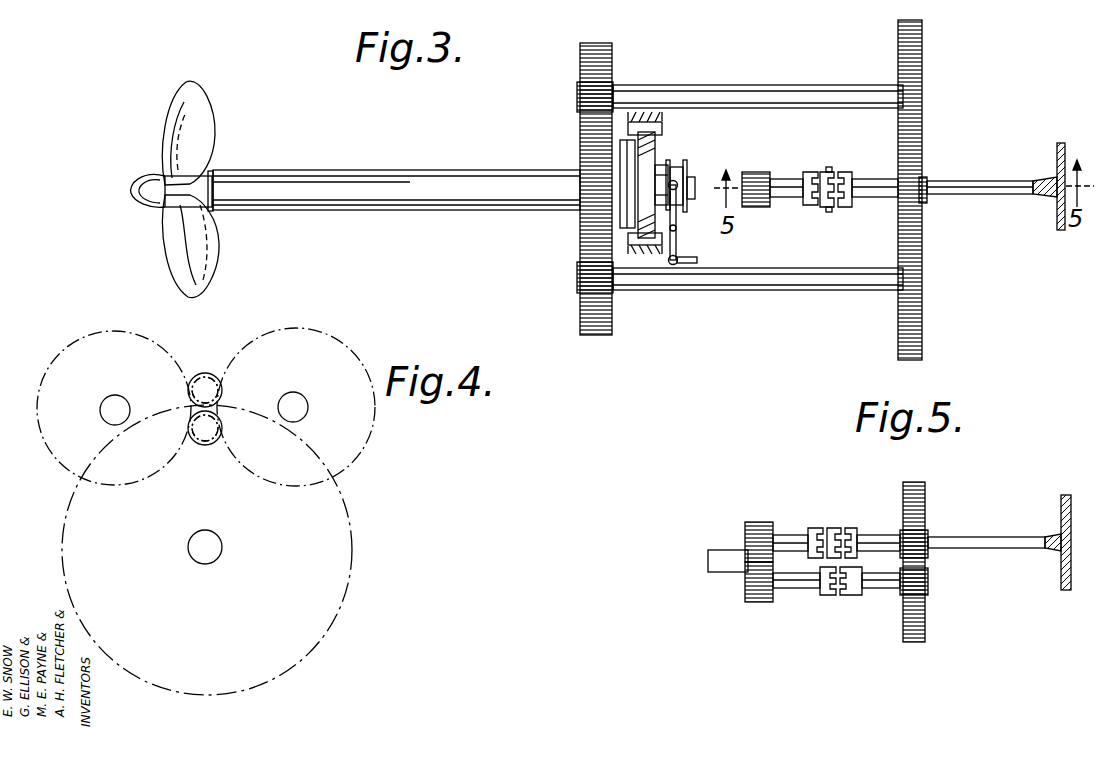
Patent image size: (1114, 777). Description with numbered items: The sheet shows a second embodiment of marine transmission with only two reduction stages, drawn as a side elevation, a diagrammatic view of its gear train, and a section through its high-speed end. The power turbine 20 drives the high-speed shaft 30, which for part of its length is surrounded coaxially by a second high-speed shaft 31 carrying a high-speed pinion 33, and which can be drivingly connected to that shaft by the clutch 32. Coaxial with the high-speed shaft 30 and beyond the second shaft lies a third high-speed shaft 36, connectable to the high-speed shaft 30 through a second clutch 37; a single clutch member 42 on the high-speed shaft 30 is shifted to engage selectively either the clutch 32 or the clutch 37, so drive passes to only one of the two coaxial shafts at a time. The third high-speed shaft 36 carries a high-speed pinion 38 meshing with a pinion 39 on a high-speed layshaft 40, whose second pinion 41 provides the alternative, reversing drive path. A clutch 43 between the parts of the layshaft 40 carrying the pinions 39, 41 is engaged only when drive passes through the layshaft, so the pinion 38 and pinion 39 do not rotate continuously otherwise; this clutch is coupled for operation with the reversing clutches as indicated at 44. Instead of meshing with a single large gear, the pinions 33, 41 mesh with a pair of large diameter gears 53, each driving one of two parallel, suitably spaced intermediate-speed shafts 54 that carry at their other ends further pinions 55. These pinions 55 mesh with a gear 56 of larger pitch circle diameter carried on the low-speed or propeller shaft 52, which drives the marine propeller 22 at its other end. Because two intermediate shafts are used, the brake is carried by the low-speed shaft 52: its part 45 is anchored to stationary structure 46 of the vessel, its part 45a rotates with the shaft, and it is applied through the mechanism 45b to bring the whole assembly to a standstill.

In FIG. 3, the power turbine 20 is at (1057, 156).
In FIG. 5, the power turbine 20 is at (1061, 511).
In FIG. 3, the propeller 22 is at (198, 108).
In FIG. 3, the high-speed shaft 30 is at (986, 195).
In FIG. 5, the high-speed shaft 30 is at (986, 549).
In FIG. 3, the second high-speed shaft 31 is at (880, 180).
In FIG. 5, the second high-speed shaft 31 is at (881, 540).
In FIG. 3, the clutch 32 is at (840, 208).
In FIG. 5, the clutch 32 is at (846, 529).
In FIG. 3, the high-speed pinion 33 is at (923, 176).
In FIG. 4, the high-speed pinion 33 is at (213, 373).
In FIG. 5, the high-speed pinion 33 is at (928, 531).
In FIG. 3, the third high-speed shaft 36 is at (790, 180).
In FIG. 5, the third high-speed shaft 36 is at (791, 535).
In FIG. 3, the second clutch 37 is at (811, 172).
In FIG. 5, the second clutch 37 is at (817, 530).
In FIG. 3, the high-speed pinion 38 is at (756, 208).
In FIG. 4, the high-speed pinion 38 is at (198, 375).
In FIG. 5, the high-speed pinion 38 is at (745, 531).
In FIG. 4, the pinion 39 is at (200, 447).
In FIG. 5, the pinion 39 is at (756, 602).
In FIG. 5, the high-speed layshaft 40 is at (791, 590).
In FIG. 4, the second pinion 41 is at (209, 447).
In FIG. 5, the second pinion 41 is at (928, 586).
In FIG. 3, the clutch member 42 is at (836, 171).
In FIG. 5, the clutch member 42 is at (838, 528).
In FIG. 5, the clutch 43 is at (849, 596).
In FIG. 5, the coupling 44 is at (838, 566).
In FIG. 3, the brake part 45 is at (648, 152).
In FIG. 3, the brake part 45a is at (622, 150).
In FIG. 3, the brake mechanism 45b is at (680, 216).
In FIG. 3, the stationary structure 46 is at (637, 120).
In FIG. 3, the low-speed shaft 52 is at (392, 170).
In FIG. 3, the large diameter gears 53 is at (922, 42).
In FIG. 4, the large diameter gears 53 is at (86, 334).
In FIG. 5, the large diameter gears 53 is at (926, 626).
In FIG. 3, the intermediate-speed shafts 54 is at (781, 85).
In FIG. 5, the intermediate-speed shafts 54 is at (708, 556).
In FIG. 3, the pinion 55 is at (578, 93).
In FIG. 4, the pinion 55 is at (101, 413).
In FIG. 3, the gear 56 is at (593, 337).
In FIG. 4, the gear 56 is at (352, 553).